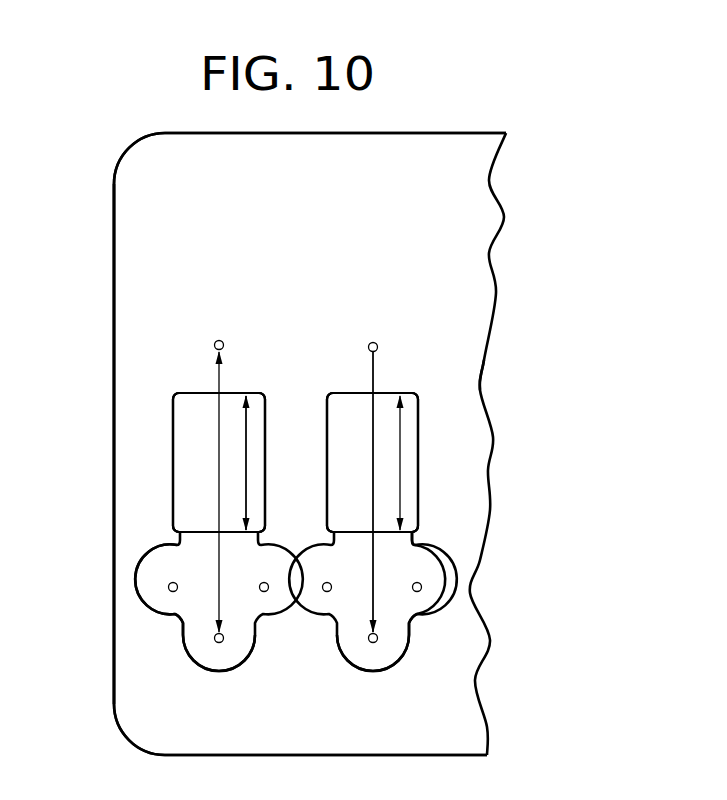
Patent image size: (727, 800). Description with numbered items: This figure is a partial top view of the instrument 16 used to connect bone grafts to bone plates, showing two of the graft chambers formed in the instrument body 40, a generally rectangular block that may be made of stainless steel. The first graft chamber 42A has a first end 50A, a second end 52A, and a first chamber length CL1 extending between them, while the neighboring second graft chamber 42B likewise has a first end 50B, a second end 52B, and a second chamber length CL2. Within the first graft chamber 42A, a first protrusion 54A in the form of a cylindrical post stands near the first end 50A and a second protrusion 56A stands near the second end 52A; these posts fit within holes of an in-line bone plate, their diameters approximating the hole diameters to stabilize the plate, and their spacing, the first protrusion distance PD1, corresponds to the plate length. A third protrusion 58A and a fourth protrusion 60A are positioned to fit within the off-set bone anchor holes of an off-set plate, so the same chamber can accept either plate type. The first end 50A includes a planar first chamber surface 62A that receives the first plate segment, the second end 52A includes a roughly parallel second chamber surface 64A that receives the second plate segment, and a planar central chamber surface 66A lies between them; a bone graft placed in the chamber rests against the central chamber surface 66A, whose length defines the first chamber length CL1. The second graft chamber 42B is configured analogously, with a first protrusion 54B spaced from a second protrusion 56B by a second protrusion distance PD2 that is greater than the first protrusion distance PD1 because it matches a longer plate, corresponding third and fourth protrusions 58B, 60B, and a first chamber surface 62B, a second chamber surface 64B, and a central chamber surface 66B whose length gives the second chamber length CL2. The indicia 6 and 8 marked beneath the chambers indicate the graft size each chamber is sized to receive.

The instrument 16 is at (84, 304).
The instrument body 40 is at (122, 735).
The first pad position 6 is at (219, 617).
The second pad position 8 is at (373, 617).
The first graft chamber 42A is at (190, 497).
The second graft chamber 42B is at (424, 476).
The first end 50A is at (174, 375).
The second pad region 50B is at (397, 370).
The second end 52A is at (188, 603).
The second lobe 52B is at (437, 577).
The first protrusion 54A is at (219, 340).
The first protrusion 54B is at (372, 342).
The second protrusion 56A is at (198, 635).
The second protrusion 56B is at (380, 637).
The third protrusion 58A is at (168, 588).
The second hole 58B is at (323, 595).
The fourth protrusion 60A is at (266, 592).
The second lobe 60B is at (430, 547).
The first chamber surface 62A is at (182, 360).
The first chamber surface 62B is at (417, 368).
The second chamber surface 64A is at (197, 620).
The second chamber surface 64B is at (437, 597).
The central chamber surface 66A is at (190, 468).
The central chamber surface 66B is at (410, 437).
The first protrusion distance PD1 is at (182, 522).
The second protrusion distance PD2 is at (372, 385).
The first chamber length CL1 is at (247, 433).
The second chamber length CL2 is at (402, 427).